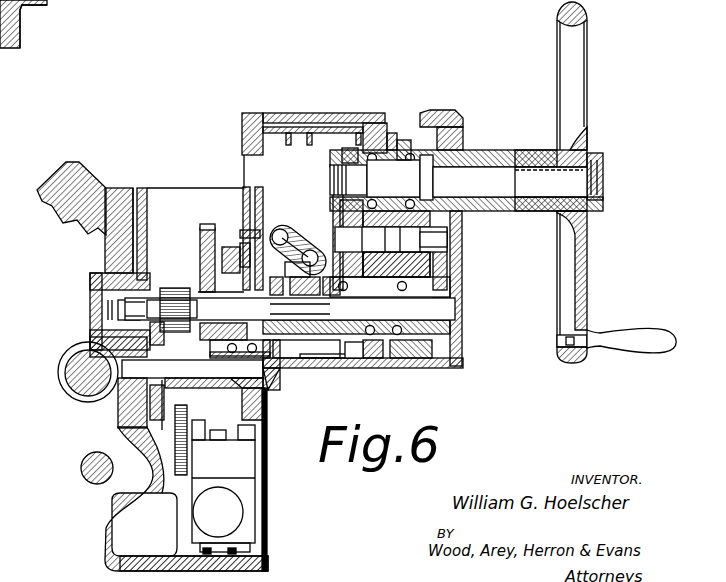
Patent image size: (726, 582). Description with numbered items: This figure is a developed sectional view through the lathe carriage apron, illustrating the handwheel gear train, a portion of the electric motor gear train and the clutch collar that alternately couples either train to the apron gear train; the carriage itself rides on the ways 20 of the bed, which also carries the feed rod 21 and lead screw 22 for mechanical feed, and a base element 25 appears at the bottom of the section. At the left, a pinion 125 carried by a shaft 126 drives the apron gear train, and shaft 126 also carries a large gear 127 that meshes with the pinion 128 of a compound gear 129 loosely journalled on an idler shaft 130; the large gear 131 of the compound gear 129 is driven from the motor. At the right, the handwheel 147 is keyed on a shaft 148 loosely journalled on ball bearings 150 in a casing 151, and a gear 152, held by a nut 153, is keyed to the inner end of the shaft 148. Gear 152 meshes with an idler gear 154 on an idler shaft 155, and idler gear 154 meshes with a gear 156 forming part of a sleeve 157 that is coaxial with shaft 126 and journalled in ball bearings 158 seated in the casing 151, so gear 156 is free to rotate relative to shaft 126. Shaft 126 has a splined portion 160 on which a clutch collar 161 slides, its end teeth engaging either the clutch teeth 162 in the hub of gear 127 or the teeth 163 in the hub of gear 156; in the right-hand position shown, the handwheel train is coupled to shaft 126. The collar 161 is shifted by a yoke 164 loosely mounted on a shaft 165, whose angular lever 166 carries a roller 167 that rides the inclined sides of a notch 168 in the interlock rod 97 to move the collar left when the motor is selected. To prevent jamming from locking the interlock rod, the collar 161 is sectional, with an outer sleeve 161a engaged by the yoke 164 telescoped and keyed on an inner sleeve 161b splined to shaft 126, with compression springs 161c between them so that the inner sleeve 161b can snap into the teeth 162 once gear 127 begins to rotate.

The ways 20 is at (57, 198).
The feed rod 21 is at (84, 475).
The lead screw 22 is at (62, 378).
The base plate 25 is at (268, 561).
The interlock rod 97 is at (232, 247).
The pinion 125 is at (170, 288).
The shaft 126 is at (198, 307).
The large gear 127 is at (207, 228).
The pinion 128 is at (188, 410).
The compound gear 129 is at (128, 398).
The idler shaft 130 is at (263, 388).
The large gear 131 is at (123, 425).
The handwheel 147 is at (571, 83).
The shaft 148 is at (483, 180).
The ball bearings 150 is at (415, 126).
The casing 151 is at (390, 128).
The gear 152 is at (342, 153).
The nut 153 is at (336, 166).
The idler gear 154 is at (338, 228).
The idler shaft 155 is at (458, 224).
The gear 156 is at (350, 362).
The sleeve 157 is at (398, 370).
The ball bearings 158 is at (455, 268).
The splined portion 160 is at (320, 370).
The clutch collar 161 is at (312, 370).
The outer sleeve 161a is at (298, 292).
The inner sleeve 161b is at (278, 370).
The compression springs 161c is at (306, 350).
The clutch teeth 162 is at (290, 309).
The teeth 163 is at (345, 368).
The yoke 164 is at (318, 275).
The shaft 165 is at (298, 240).
The angular lever 166 is at (278, 236).
The roller 167 is at (250, 218).
The notch 168 is at (212, 230).